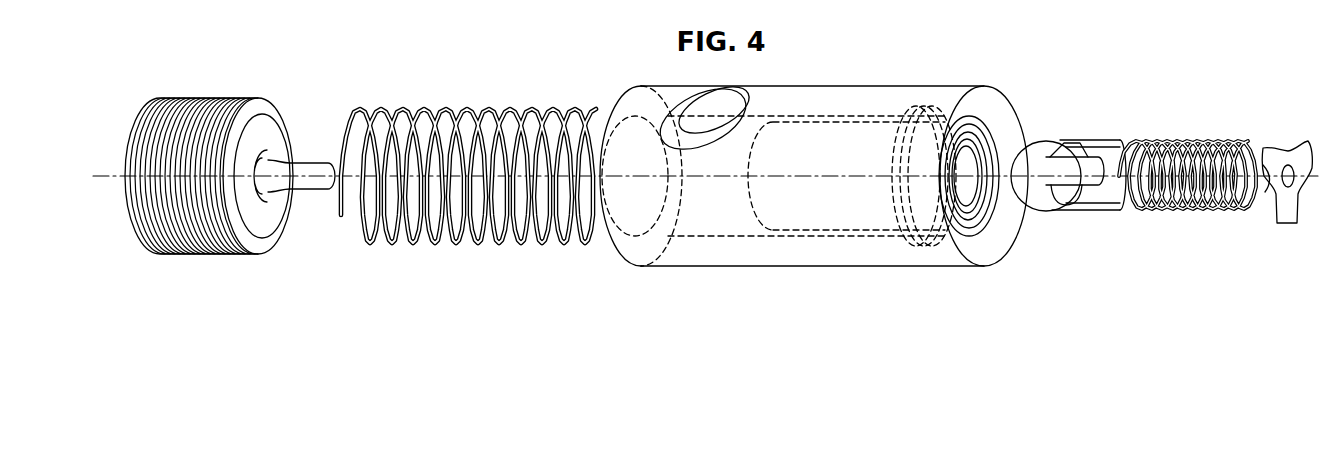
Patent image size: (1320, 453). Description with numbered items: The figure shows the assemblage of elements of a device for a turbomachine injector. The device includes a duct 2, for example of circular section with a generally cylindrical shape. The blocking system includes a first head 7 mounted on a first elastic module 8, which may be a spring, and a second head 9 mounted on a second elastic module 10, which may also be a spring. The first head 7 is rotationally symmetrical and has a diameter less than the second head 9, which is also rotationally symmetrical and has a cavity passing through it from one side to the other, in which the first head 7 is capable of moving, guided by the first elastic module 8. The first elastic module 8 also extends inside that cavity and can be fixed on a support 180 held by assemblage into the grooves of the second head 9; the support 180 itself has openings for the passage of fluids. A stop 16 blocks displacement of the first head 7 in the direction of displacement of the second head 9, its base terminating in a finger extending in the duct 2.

The stop 16 is at (176, 222).
The second elastic module 10 is at (420, 233).
The duct 2 is at (693, 252).
The second head 9 is at (829, 212).
The first head 7 is at (1047, 212).
The first elastic module 8 is at (1170, 200).
The support 180 is at (1273, 203).